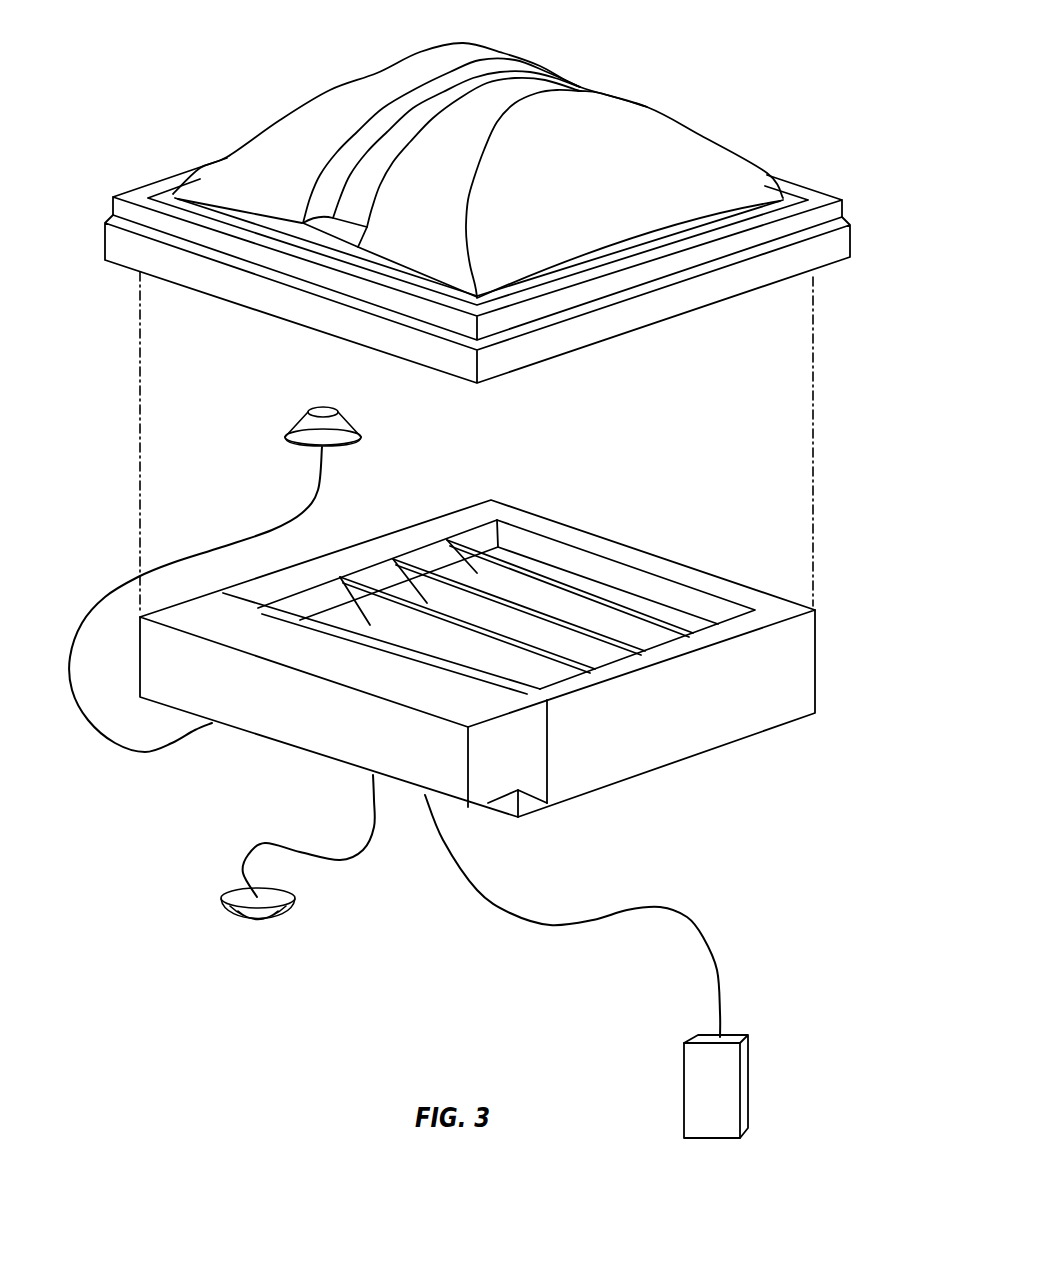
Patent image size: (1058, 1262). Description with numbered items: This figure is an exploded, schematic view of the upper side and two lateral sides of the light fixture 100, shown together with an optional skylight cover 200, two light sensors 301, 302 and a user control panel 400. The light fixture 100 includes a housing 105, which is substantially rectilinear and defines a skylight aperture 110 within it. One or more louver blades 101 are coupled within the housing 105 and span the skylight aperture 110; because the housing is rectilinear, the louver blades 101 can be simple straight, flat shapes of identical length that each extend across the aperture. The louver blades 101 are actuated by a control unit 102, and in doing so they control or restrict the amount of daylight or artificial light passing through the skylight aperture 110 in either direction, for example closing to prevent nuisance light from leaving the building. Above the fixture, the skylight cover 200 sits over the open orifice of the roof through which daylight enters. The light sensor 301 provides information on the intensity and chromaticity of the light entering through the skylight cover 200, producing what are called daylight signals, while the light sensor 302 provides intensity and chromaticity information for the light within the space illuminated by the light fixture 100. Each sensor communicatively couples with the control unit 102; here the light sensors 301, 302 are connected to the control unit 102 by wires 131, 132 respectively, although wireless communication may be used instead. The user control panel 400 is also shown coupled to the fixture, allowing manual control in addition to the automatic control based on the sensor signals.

The light fixture 100 is at (488, 610).
The louver blades 101 is at (647, 607).
The control unit 102 is at (253, 765).
The housing 105 is at (783, 697).
The skylight aperture 110 is at (477, 590).
The wire 131 is at (117, 582).
The wire 132 is at (347, 860).
The skylight cover 200 is at (642, 130).
The light sensor 301 is at (300, 428).
The light sensor 302 is at (237, 912).
The user control panel 400 is at (746, 1062).